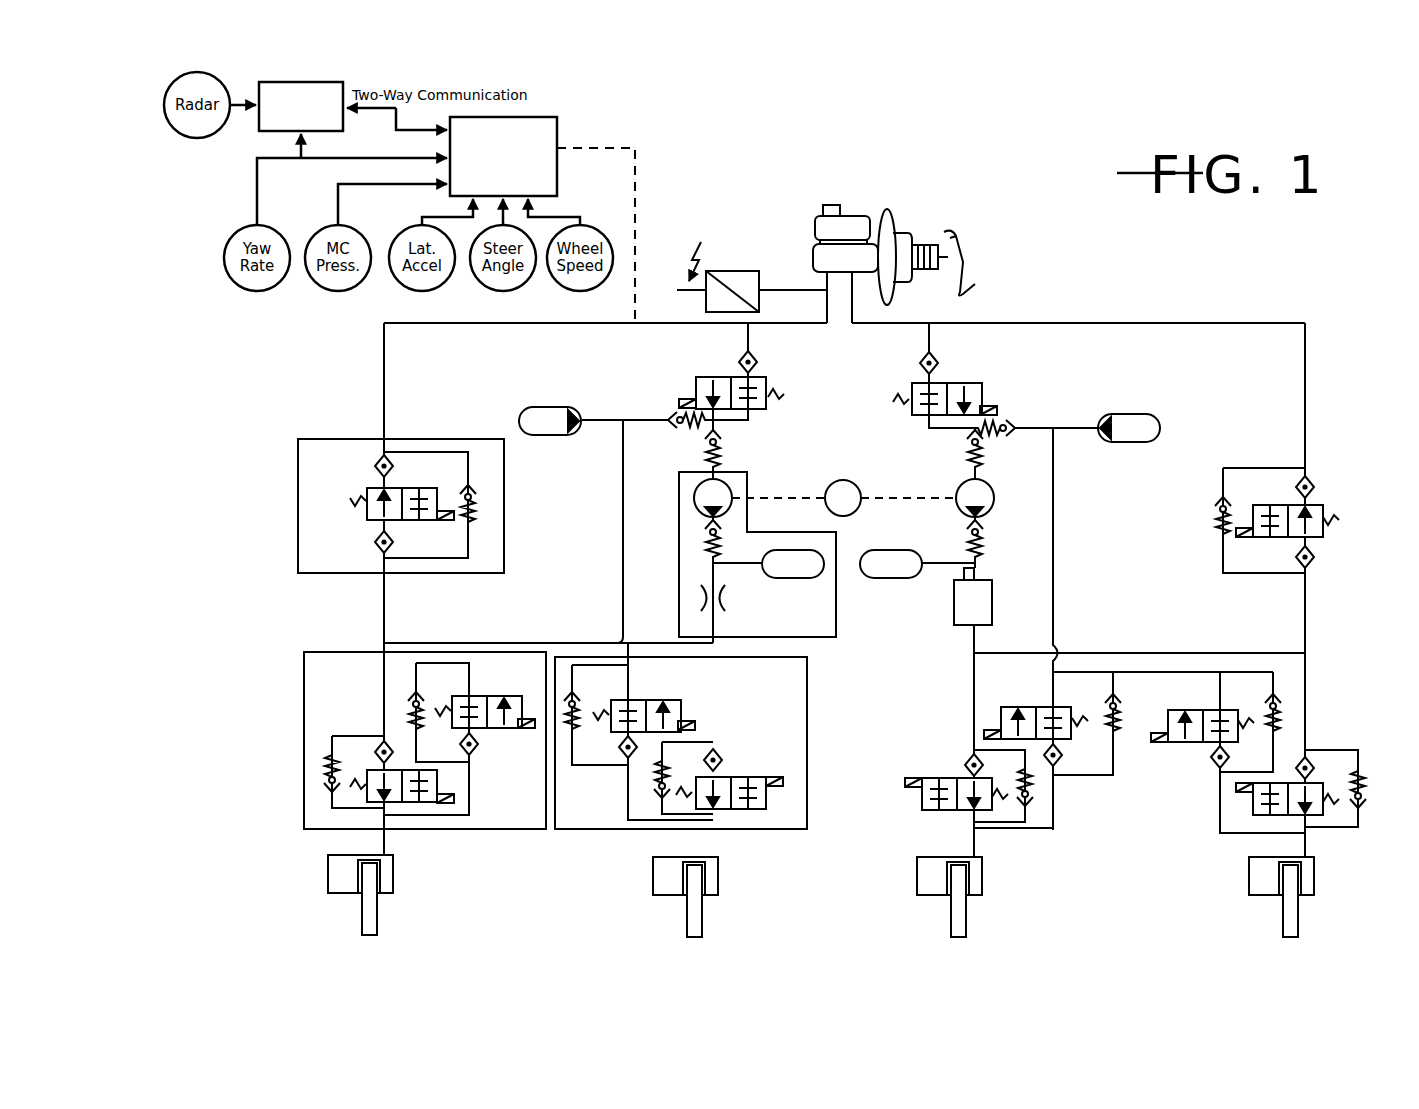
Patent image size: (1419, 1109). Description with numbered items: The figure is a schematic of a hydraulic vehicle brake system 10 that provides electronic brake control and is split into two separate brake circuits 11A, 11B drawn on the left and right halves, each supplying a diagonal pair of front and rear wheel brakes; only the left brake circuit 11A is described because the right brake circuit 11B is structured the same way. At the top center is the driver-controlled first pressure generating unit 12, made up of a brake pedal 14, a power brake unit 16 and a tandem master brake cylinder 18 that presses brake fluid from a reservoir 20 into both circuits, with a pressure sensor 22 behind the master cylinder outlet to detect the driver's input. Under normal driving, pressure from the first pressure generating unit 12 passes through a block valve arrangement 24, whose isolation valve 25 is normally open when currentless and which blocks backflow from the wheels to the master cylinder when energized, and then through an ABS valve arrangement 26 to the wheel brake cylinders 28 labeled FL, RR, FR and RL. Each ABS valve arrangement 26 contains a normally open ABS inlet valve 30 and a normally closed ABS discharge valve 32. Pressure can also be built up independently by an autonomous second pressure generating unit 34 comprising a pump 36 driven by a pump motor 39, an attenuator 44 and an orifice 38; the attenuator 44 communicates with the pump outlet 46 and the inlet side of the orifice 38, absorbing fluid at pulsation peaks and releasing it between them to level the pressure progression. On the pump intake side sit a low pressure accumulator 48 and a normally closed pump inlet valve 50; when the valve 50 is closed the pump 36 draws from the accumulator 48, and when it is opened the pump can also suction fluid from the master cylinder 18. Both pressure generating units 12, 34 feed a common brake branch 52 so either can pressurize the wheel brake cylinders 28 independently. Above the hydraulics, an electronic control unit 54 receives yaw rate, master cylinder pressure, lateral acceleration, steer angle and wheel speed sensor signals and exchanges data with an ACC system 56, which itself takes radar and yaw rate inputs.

The vehicle brake system 10 is at (348, 388).
The left brake circuit 11A is at (386, 352).
The right brake circuit 11B is at (1305, 378).
The driver-controlled first pressure generating unit 12 is at (891, 237).
The brake pedal 14 is at (968, 281).
The power brake unit 16 is at (906, 232).
The tandem master brake cylinder 18 is at (816, 258).
The reservoir 20 is at (824, 228).
The pressure sensor 22 is at (736, 271).
The block valve arrangement 24 is at (371, 506).
The isolation valve 25 is at (375, 521).
The ABS valve arrangement 26 is at (304, 712).
The wheel brake cylinders 28 is at (392, 862).
The ABS inlet valve 30 is at (442, 778).
The ABS discharge valve 32 is at (486, 730).
The autonomous second pressure generating unit 34 is at (733, 546).
The pump 36 is at (695, 503).
The orifice 38 is at (700, 600).
The pump motor 39 is at (841, 480).
The attenuator 44 is at (890, 585).
The pump outlet 46 is at (707, 517).
The low pressure accumulator 48 is at (553, 407).
The pump inlet valve 50 is at (728, 377).
The common brake branch 52 is at (572, 643).
The electronic control unit 54 is at (553, 117).
The ACC system 56 is at (336, 82).